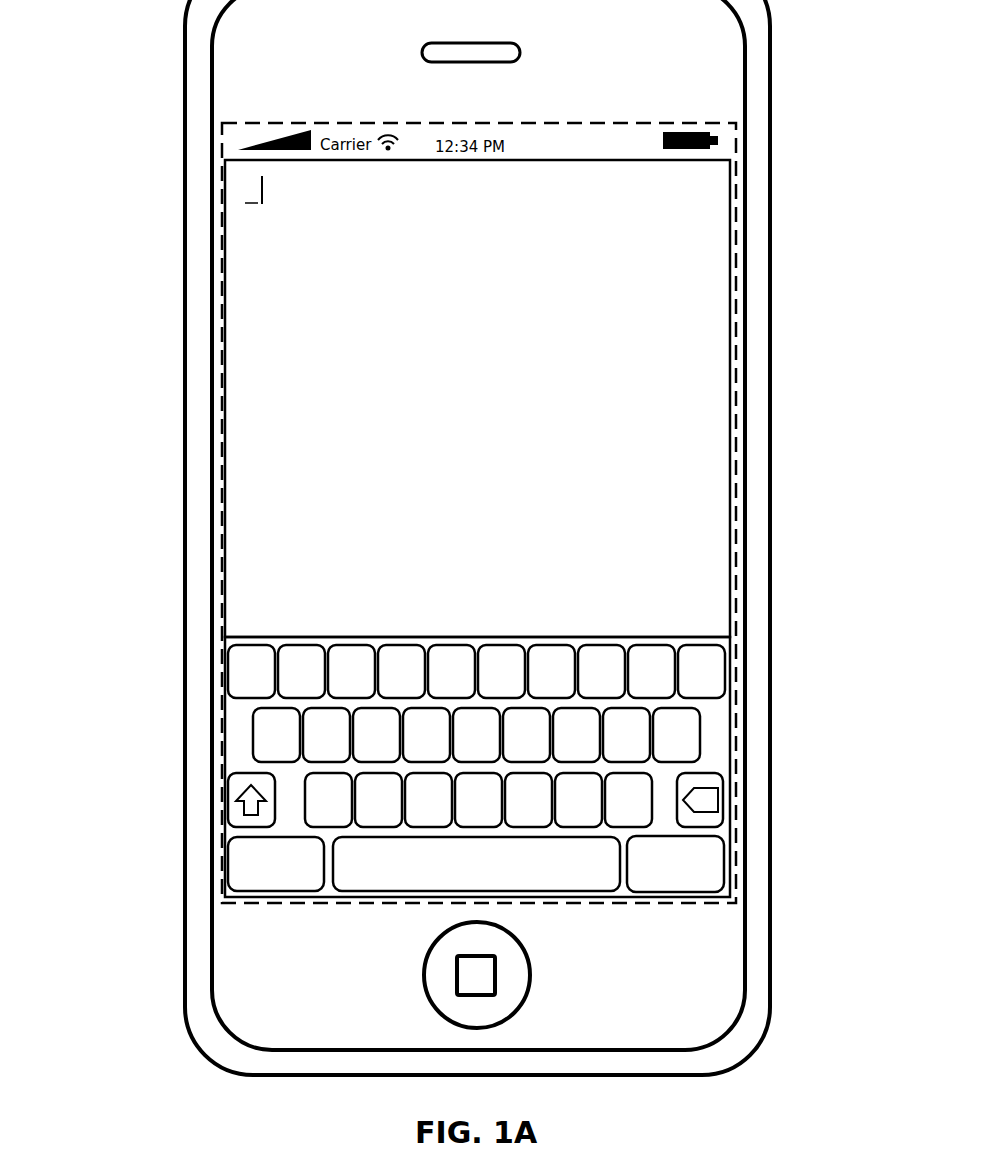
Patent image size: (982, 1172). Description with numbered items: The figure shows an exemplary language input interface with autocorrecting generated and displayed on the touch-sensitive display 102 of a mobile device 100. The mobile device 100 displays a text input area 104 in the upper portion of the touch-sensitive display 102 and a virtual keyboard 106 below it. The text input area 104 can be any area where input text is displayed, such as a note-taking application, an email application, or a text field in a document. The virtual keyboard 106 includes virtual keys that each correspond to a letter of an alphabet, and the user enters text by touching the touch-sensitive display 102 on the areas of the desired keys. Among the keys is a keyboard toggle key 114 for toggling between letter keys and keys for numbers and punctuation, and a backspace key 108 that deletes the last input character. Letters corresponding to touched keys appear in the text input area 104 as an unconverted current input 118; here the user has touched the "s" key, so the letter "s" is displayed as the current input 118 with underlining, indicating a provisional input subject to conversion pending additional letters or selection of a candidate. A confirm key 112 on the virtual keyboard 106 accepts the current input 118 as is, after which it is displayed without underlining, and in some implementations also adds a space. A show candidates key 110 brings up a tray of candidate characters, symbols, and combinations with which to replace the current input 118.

The mobile device 100 is at (772, 70).
The touch-sensitive display 102 is at (738, 141).
The text input area 104 is at (704, 619).
The virtual keyboard 106 is at (713, 723).
The backspace key 108 is at (700, 773).
The show candidates key 110 is at (703, 892).
The confirm key 112 is at (541, 891).
The keyboard toggle key 114 is at (228, 862).
The unconverted current input 118 is at (260, 240).